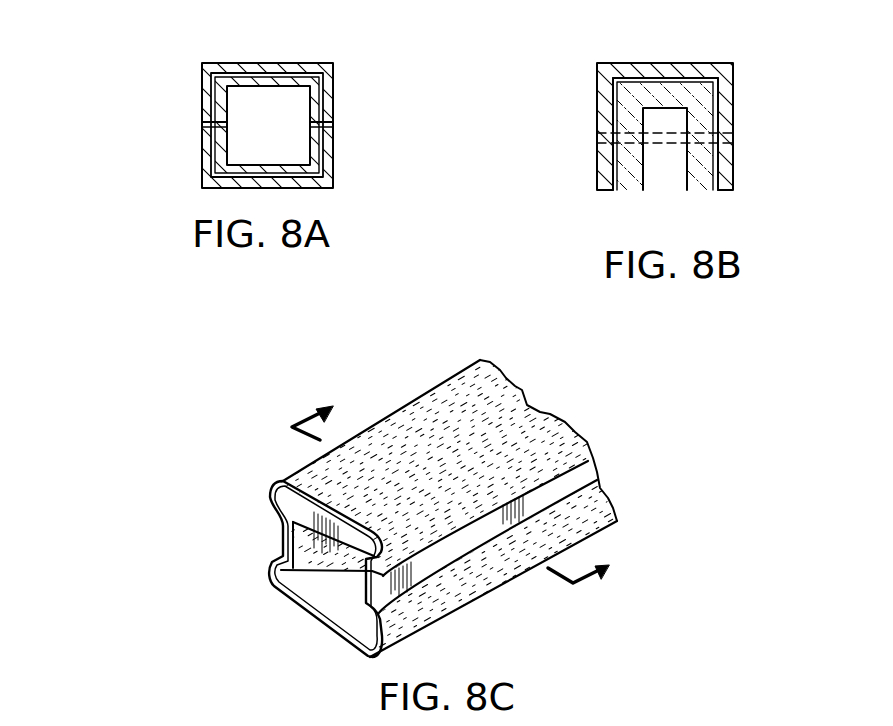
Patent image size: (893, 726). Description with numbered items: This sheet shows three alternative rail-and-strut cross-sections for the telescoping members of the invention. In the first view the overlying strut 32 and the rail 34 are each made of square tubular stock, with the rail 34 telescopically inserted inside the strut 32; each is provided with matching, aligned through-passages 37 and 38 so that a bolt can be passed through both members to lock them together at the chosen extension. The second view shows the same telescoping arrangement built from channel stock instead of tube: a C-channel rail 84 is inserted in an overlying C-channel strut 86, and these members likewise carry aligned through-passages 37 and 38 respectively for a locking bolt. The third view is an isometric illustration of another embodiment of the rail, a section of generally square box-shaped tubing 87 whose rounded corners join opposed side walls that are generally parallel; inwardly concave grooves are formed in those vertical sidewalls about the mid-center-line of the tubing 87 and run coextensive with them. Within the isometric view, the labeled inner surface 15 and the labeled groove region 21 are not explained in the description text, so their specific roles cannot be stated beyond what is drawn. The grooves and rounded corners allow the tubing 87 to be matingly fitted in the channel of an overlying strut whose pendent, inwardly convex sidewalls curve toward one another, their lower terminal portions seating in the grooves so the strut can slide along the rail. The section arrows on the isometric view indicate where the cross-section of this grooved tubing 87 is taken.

In FIG. 8A, the strut 32 is at (203, 153).
In FIG. 8A, the rail 34 is at (310, 146).
In FIG. 8A, the through-passage 37 is at (310, 123).
In FIG. 8B, the through-passage 37 is at (640, 138).
In FIG. 8A, the through-passage 38 is at (202, 122).
In FIG. 8B, the through-passage 38 is at (738, 135).
In FIG. 8B, the C-channel strut 86 is at (614, 63).
In FIG. 8B, the C-channel rail 84 is at (630, 190).
In FIG. 8C, the box-shaped tubing 87 is at (462, 370).
In FIG. 8C, the rail member 15 is at (317, 523).
In FIG. 8C, the groove 21 is at (282, 541).